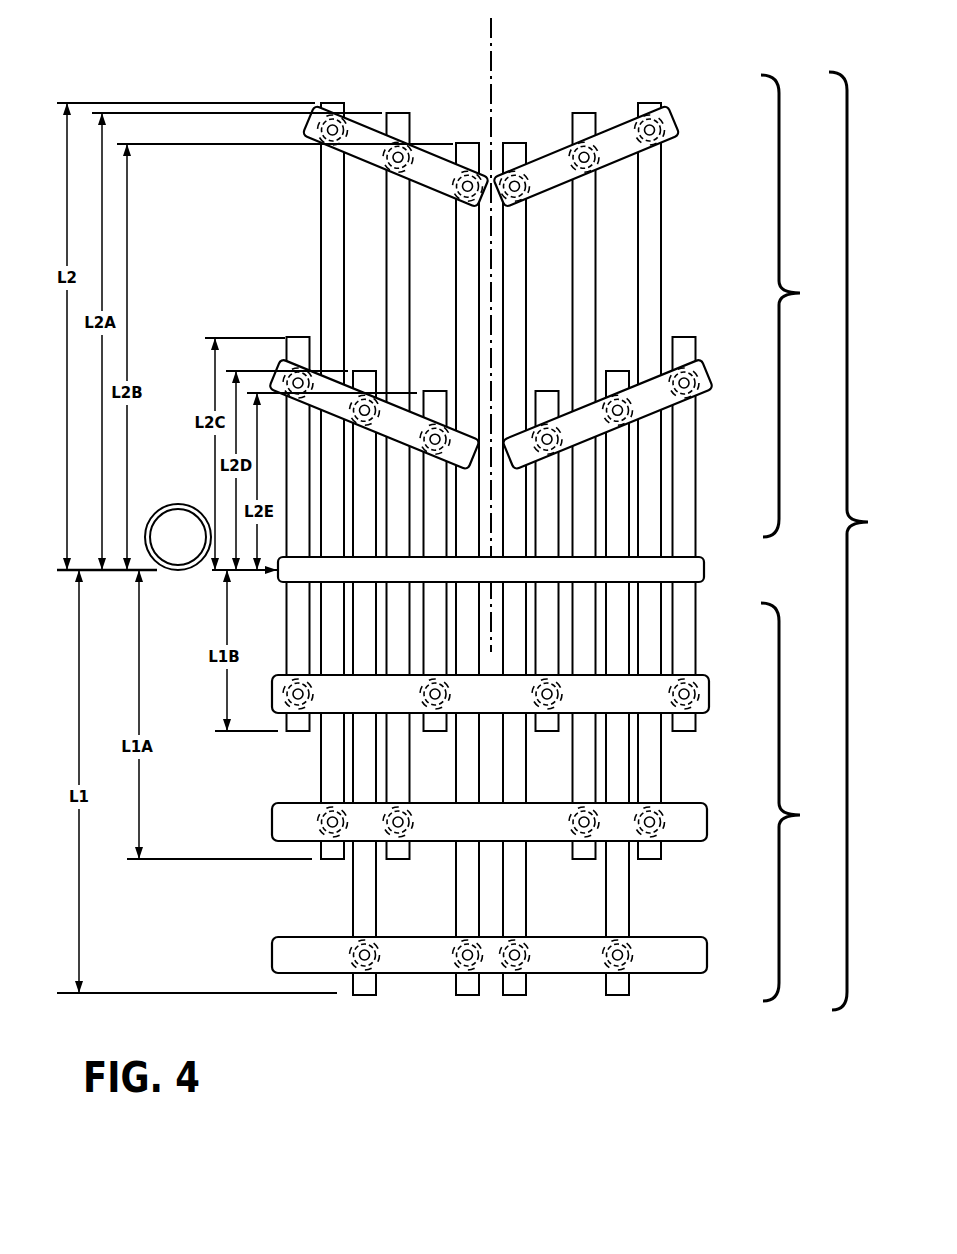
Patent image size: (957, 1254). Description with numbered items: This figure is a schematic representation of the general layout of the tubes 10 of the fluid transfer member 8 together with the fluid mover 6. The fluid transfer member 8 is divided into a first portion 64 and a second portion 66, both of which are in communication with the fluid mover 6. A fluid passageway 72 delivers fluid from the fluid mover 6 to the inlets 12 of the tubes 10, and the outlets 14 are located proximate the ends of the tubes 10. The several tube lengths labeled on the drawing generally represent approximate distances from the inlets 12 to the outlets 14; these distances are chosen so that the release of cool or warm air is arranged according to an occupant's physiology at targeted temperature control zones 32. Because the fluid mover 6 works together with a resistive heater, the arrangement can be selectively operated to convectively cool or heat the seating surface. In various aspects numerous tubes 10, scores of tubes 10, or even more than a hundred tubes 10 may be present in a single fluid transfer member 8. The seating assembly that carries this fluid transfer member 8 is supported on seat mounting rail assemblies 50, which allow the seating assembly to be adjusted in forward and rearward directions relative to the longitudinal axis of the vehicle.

The fluid mover 6 is at (170, 504).
The fluid transfer member 8 is at (858, 541).
The tube 10 is at (688, 453).
The inlet 12 is at (683, 558).
The outlet 14 is at (690, 383).
The targeted temperature control zone 32 is at (357, 135).
The seat mounting rail assembly 50 is at (208, 575).
The first portion 64 is at (796, 802).
The second portion 66 is at (796, 306).
The fluid passageway 72 is at (245, 573).